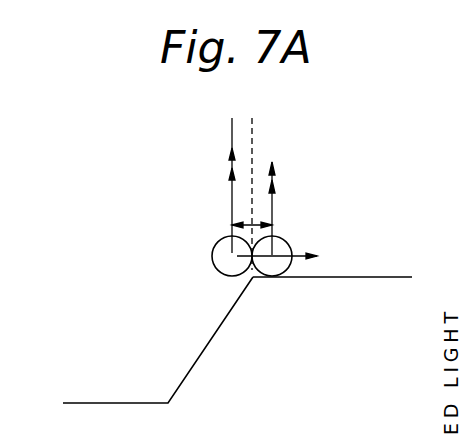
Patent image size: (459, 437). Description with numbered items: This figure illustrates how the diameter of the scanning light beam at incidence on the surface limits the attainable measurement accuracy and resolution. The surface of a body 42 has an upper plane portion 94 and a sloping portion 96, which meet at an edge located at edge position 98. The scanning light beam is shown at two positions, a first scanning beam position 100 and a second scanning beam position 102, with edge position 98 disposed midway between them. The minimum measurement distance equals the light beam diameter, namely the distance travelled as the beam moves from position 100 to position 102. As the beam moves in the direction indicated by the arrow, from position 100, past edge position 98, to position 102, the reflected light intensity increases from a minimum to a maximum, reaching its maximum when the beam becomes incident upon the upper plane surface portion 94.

The body 42 is at (337, 315).
The plane portion 94 is at (392, 277).
The sloping portion 96 is at (203, 350).
The edge position 98 is at (252, 148).
The scanning beam position 100 is at (232, 198).
The scanning beam position 102 is at (272, 215).